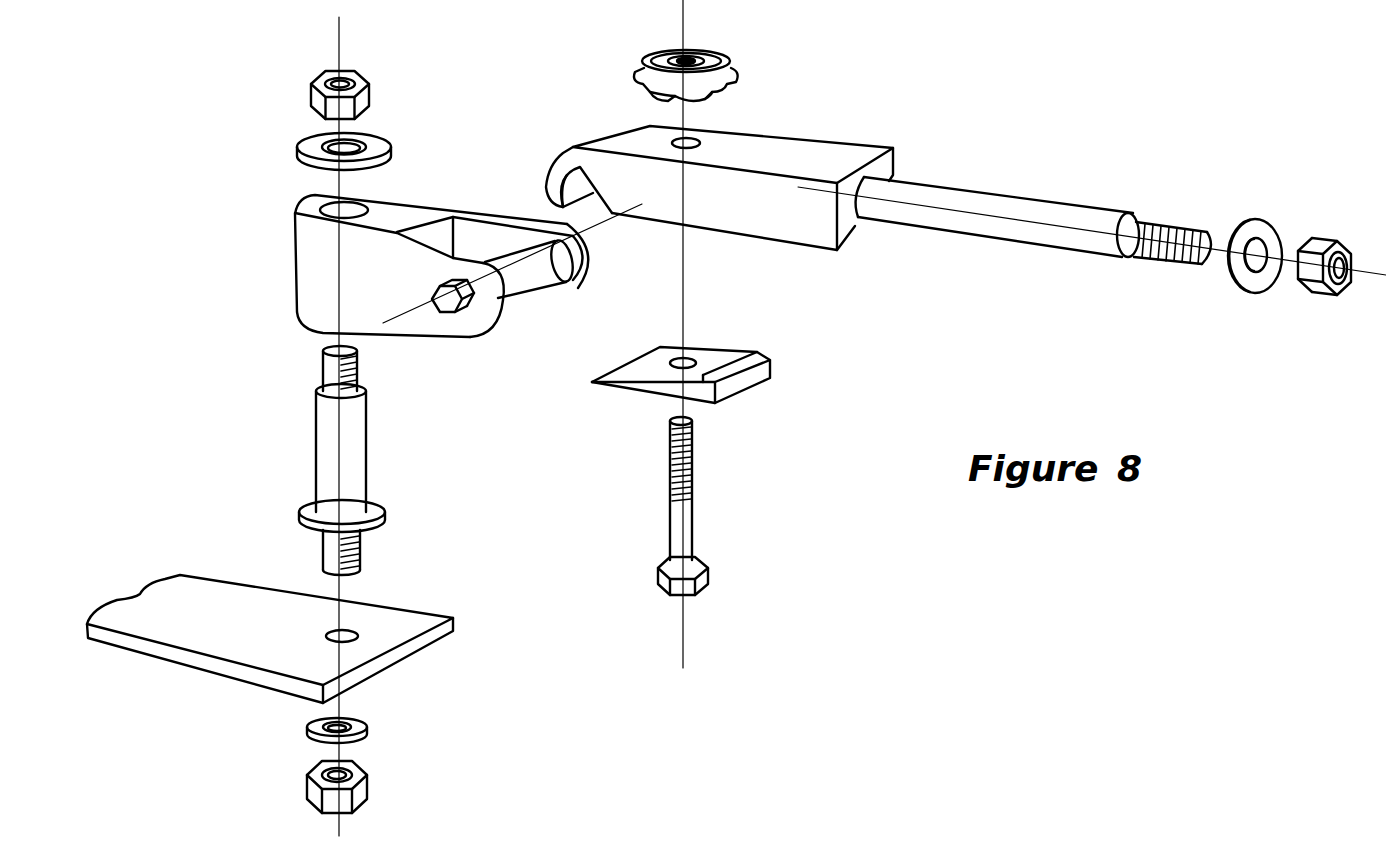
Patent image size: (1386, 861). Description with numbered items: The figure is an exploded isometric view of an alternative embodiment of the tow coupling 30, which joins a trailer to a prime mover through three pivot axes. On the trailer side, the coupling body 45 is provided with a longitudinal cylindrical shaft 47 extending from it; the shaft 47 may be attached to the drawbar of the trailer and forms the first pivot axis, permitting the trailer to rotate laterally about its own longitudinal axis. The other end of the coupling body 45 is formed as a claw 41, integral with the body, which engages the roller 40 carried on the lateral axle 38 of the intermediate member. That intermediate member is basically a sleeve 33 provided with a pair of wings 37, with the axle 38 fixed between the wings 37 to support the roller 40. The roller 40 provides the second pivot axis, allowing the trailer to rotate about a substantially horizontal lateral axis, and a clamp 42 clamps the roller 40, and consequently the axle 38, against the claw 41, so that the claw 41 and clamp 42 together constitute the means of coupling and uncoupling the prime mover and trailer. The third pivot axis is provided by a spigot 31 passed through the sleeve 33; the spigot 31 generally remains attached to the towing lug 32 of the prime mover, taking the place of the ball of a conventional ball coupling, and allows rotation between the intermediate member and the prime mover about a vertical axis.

The tow coupling 30 is at (765, 78).
The spigot 31 is at (357, 433).
The towing lug 32 is at (208, 588).
The sleeve 33 is at (381, 214).
The wings 37 is at (473, 228).
The axle 38 is at (467, 310).
The roller 40 is at (530, 285).
The claw 41 is at (563, 155).
The clamp 42 is at (757, 377).
The coupling body 45 is at (822, 160).
The longitudinal cylindrical shaft 47 is at (953, 193).